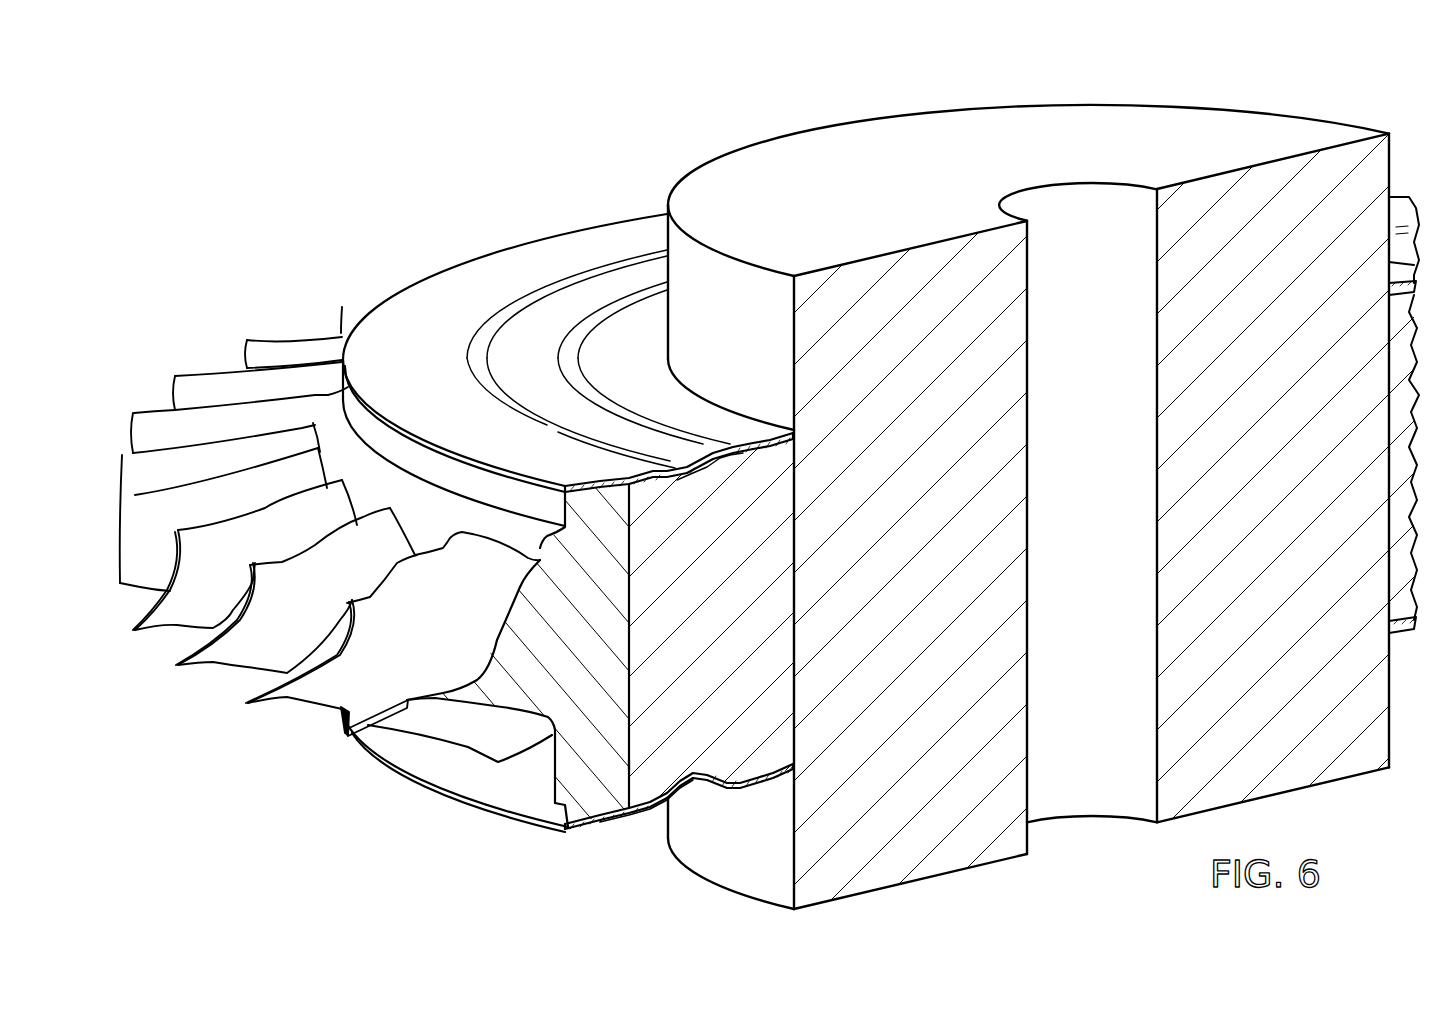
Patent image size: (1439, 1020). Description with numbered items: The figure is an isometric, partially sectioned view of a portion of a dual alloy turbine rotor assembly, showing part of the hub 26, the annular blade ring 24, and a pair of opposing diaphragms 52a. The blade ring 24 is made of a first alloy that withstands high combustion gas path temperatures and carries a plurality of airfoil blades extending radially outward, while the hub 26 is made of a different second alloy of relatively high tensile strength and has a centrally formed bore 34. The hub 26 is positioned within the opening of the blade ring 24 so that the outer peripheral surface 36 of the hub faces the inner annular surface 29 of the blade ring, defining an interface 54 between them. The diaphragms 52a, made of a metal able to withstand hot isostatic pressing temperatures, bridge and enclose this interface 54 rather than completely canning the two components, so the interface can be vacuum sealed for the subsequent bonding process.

The annular blade ring 24 is at (212, 363).
The hub 26 is at (1333, 111).
The inner annular surface 29 is at (628, 720).
The bore 34 is at (1100, 813).
The outer peripheral surface 36 is at (630, 762).
The diaphragm 52a is at (490, 265).
The interface 54 is at (630, 806).